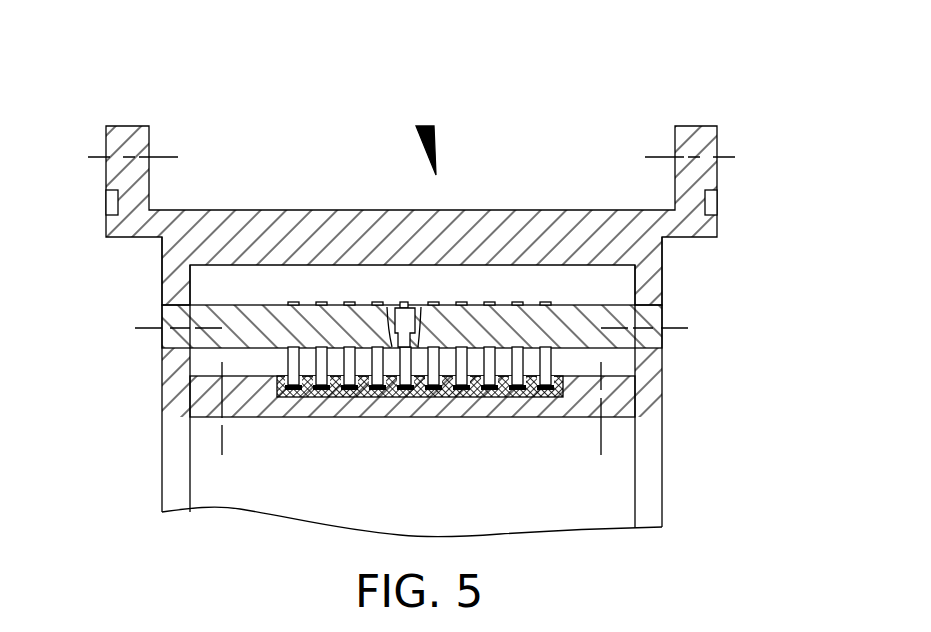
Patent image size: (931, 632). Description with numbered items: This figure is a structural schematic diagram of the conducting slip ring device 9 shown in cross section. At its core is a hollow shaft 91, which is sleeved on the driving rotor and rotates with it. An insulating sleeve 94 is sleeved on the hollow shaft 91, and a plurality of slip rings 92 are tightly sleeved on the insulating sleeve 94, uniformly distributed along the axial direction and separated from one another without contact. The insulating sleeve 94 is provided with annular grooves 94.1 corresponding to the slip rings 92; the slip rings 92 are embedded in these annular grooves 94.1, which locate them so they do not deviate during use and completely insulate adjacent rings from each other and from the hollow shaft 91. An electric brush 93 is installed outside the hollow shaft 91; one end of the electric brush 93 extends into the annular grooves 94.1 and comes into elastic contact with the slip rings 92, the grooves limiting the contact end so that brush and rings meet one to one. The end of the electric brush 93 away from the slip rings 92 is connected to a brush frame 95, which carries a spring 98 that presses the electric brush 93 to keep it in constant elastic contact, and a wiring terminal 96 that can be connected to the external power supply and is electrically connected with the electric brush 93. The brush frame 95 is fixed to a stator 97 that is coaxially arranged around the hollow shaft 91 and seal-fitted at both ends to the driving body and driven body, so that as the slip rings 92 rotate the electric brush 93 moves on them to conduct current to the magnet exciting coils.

The conducting slip ring device 9 is at (420, 126).
The hollow shaft 91 is at (253, 397).
The slip rings 92 is at (523, 378).
The electric brush 93 is at (433, 365).
The insulating sleeve 94 is at (563, 383).
The annular grooves 94.1 is at (285, 378).
The brush frame 95 is at (258, 321).
The wiring terminal 96 is at (321, 303).
The stator 97 is at (188, 233).
The spring 98 is at (403, 317).